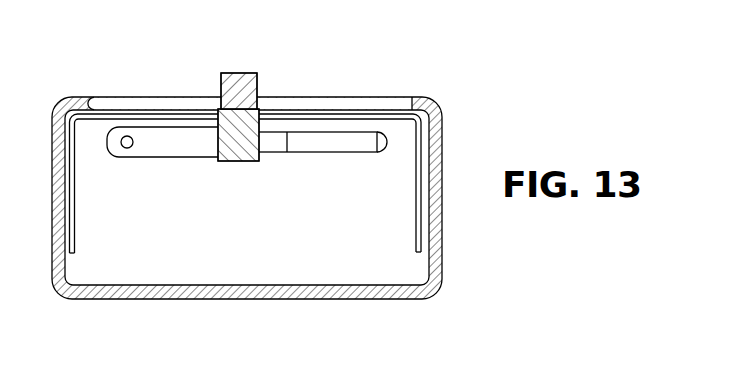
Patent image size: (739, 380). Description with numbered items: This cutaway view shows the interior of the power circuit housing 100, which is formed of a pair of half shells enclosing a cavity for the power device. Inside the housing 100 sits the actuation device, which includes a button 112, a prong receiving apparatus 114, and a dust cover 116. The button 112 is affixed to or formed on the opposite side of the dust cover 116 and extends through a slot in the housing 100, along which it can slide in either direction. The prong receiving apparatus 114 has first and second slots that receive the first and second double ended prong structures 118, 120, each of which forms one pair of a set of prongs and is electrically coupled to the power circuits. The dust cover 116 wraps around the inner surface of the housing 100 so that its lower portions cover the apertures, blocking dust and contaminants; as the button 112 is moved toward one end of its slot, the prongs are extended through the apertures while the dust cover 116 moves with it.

The housing 100 is at (52, 272).
The button 112 is at (242, 79).
The prong receiving apparatus 114 is at (251, 161).
The dust cover 116 is at (417, 160).
The first double ended prong structure 118 is at (138, 108).
The second double ended prong structure 120 is at (96, 151).